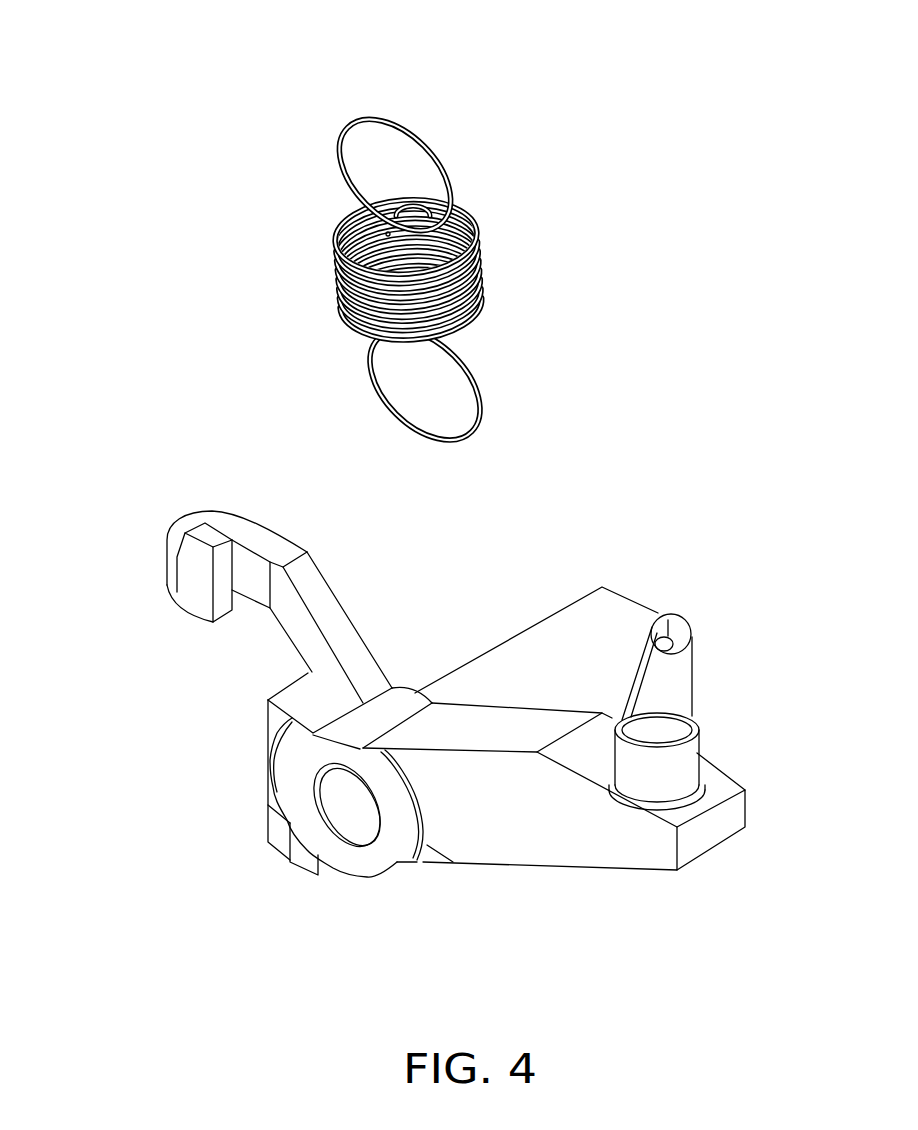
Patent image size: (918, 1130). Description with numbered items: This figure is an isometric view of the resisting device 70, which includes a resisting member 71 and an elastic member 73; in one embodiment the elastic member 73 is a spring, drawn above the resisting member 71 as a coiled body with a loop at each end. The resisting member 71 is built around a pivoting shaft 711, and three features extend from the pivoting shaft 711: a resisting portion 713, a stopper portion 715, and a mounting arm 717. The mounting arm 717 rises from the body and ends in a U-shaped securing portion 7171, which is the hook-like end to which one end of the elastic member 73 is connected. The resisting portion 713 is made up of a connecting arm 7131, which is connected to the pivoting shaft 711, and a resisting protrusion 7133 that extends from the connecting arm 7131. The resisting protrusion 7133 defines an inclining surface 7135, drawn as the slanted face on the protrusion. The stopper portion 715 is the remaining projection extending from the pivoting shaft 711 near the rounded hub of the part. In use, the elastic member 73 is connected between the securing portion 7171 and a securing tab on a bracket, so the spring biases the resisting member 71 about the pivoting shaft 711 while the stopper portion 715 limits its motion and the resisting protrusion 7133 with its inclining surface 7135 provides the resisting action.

The resisting device 70 is at (490, 35).
The resisting member 71 is at (648, 549).
The elastic member 73 is at (477, 267).
The pivoting shaft 711 is at (548, 638).
The resisting portion 713 is at (632, 927).
The connecting arm 7131 is at (543, 833).
The resisting protrusion 7133 is at (653, 760).
The inclining surface 7135 is at (638, 672).
The stopper portion 715 is at (305, 848).
The mounting arm 717 is at (322, 602).
The securing portion 7171 is at (198, 548).